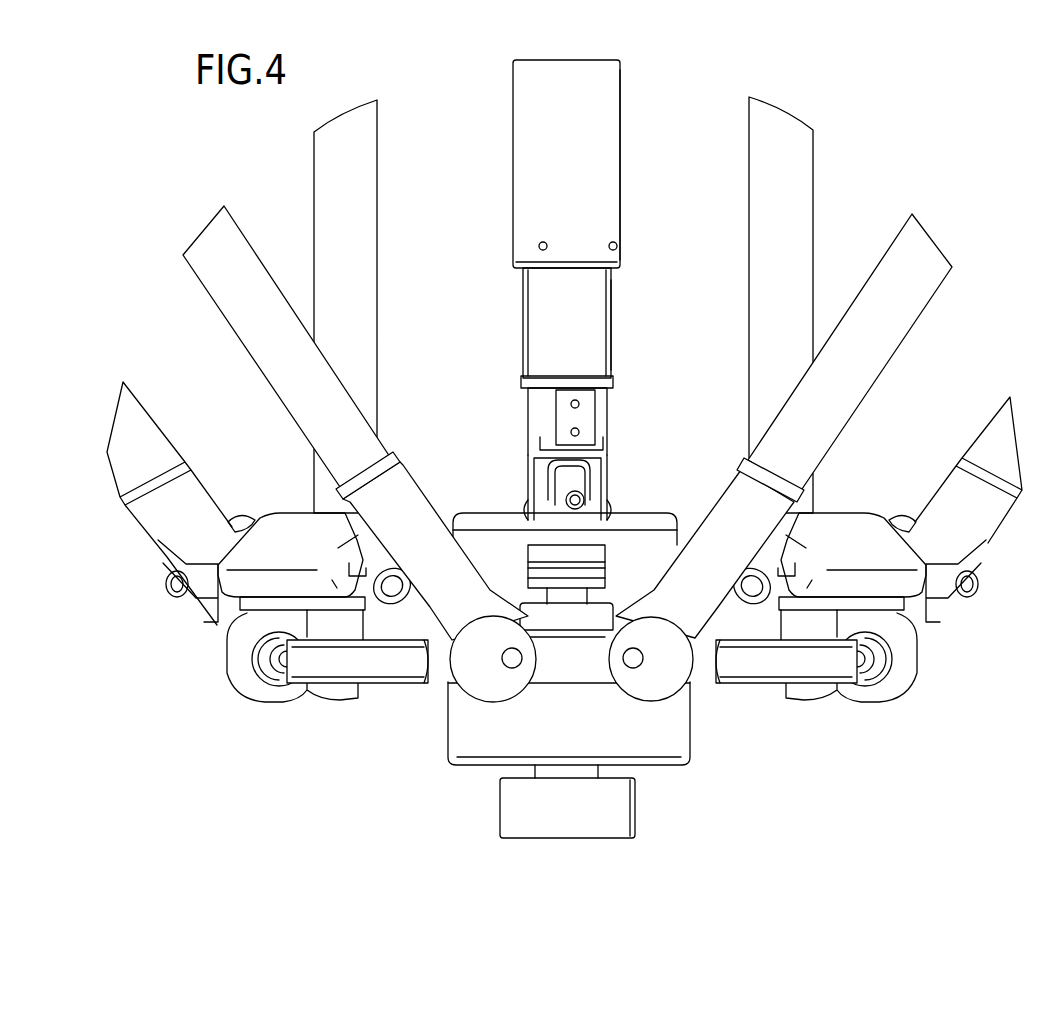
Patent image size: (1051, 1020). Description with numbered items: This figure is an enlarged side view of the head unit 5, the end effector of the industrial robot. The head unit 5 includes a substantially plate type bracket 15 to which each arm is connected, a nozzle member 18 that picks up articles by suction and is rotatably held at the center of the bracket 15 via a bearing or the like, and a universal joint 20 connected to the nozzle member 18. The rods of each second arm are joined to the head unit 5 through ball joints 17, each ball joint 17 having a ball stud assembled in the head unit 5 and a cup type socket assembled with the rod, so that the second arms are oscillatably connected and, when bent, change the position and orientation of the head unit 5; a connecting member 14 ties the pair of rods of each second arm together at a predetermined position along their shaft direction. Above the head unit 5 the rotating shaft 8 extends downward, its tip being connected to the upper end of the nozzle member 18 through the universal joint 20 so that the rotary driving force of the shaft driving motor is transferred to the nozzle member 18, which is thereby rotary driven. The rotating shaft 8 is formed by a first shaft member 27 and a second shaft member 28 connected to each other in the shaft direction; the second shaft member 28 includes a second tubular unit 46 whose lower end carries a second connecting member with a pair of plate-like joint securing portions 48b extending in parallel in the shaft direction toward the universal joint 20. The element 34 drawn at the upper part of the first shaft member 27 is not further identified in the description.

The housing 34 is at (622, 118).
The first shaft member 27 is at (597, 164).
The rotating shaft 8 is at (613, 224).
The second shaft member 28 is at (601, 328).
The second tubular unit 46 is at (612, 342).
The joint securing portions 48b is at (585, 411).
The universal joint 20 is at (620, 477).
The connecting member 14 is at (258, 612).
The ball joint 17 is at (279, 692).
The head unit 5 is at (520, 664).
The bracket 15 is at (563, 668).
The nozzle member 18 is at (634, 806).